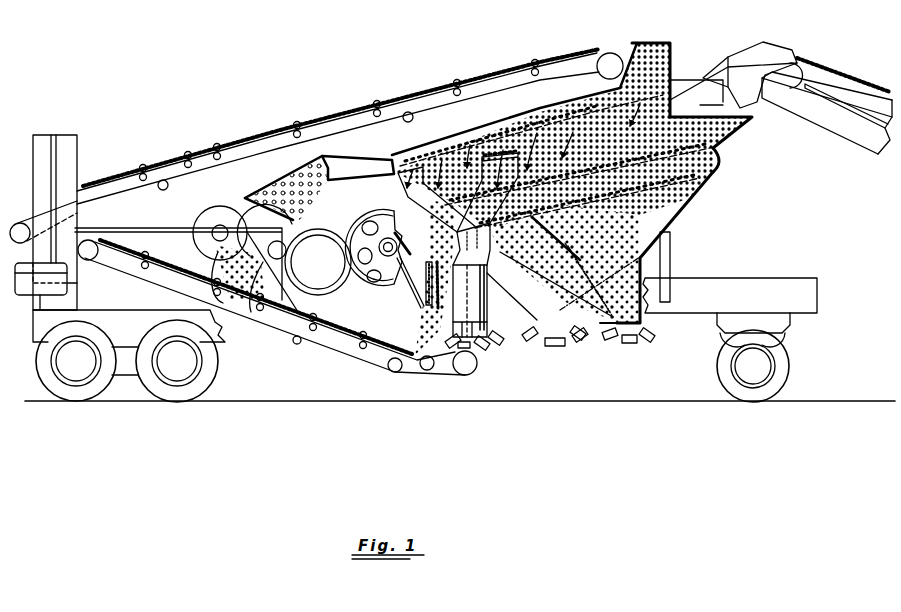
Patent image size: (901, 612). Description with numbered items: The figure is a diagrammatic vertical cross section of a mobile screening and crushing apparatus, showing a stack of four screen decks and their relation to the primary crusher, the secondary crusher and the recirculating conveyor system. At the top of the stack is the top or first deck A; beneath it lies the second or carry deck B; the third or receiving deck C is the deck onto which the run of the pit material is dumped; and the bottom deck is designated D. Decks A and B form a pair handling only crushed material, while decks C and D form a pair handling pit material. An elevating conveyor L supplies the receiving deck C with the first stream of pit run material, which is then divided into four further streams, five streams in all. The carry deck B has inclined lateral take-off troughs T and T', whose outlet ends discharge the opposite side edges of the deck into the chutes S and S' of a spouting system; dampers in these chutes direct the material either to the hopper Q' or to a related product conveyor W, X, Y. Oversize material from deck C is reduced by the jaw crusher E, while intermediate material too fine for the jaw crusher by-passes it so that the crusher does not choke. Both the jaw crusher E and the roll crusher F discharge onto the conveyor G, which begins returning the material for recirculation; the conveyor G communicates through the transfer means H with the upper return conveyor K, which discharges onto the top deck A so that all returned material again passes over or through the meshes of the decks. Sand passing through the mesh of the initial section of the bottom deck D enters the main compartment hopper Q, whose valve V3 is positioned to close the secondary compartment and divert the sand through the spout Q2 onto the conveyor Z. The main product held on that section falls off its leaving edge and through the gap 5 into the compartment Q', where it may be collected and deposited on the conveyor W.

The transfer means H is at (46, 203).
The upper return conveyor K is at (348, 100).
The top or first deck A is at (652, 92).
The second or carry deck B is at (595, 124).
The third or receiving deck C is at (716, 148).
The fourth or bottom deck D is at (684, 177).
The elevating conveyor L is at (832, 106).
The main compartment hopper Q is at (665, 247).
The spout Q2 is at (646, 321).
The hopper / compartment Q' is at (565, 281).
The lateral take-off trough T' is at (323, 188).
The lateral take-off trough T is at (467, 199).
The gap 5 is at (525, 208).
The valve V3 is at (612, 243).
The chute S is at (470, 301).
The chute S' is at (503, 297).
The jaw crusher E is at (411, 295).
The conveyor G is at (353, 330).
The roll crusher F is at (237, 284).
The product conveyor X is at (456, 350).
The product conveyor Y is at (494, 346).
The product conveyor W is at (555, 348).
The conveyor Z is at (628, 346).